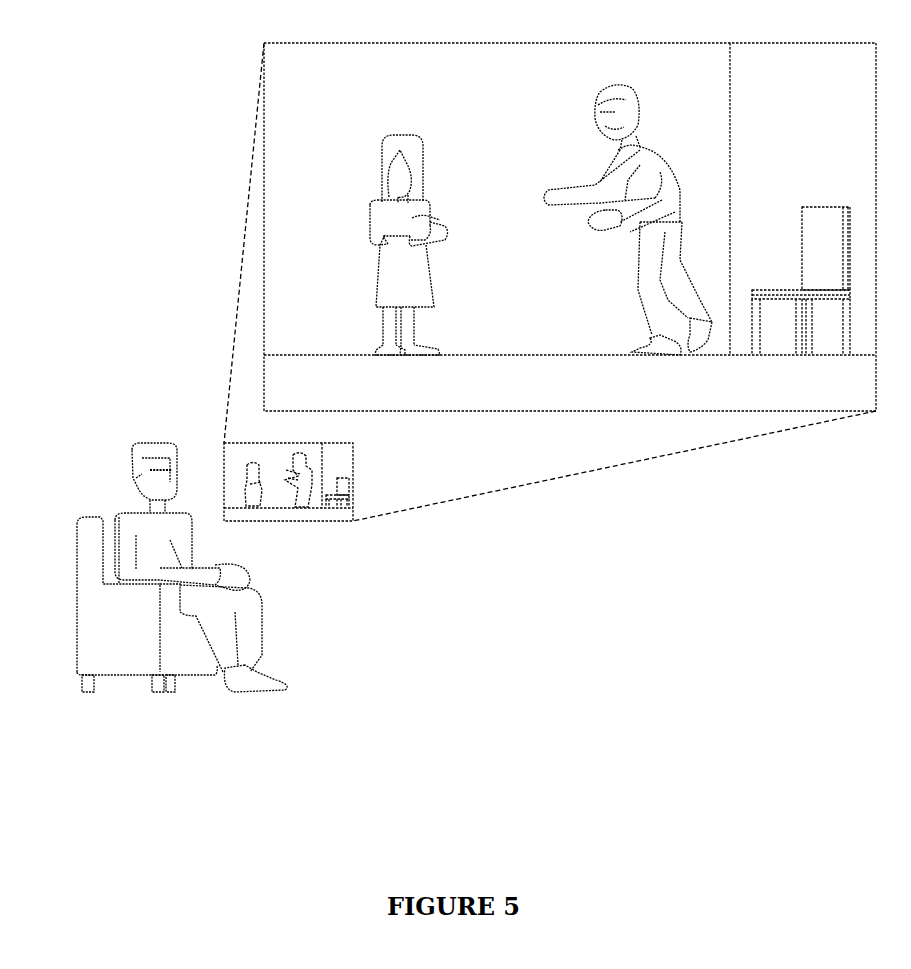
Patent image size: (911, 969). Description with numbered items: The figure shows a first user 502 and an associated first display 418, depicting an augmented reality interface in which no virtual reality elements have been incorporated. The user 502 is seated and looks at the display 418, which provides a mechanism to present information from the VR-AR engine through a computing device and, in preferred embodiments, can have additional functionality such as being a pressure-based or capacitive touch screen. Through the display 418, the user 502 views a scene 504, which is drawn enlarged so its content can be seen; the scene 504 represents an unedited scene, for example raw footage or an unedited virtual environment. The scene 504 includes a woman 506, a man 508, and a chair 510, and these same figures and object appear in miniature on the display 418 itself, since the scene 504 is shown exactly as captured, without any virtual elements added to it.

The user 502 is at (172, 443).
The scene 504 is at (264, 43).
The woman 506 is at (392, 135).
The man 508 is at (598, 95).
The chair 510 is at (822, 207).
The display 418 is at (297, 522).